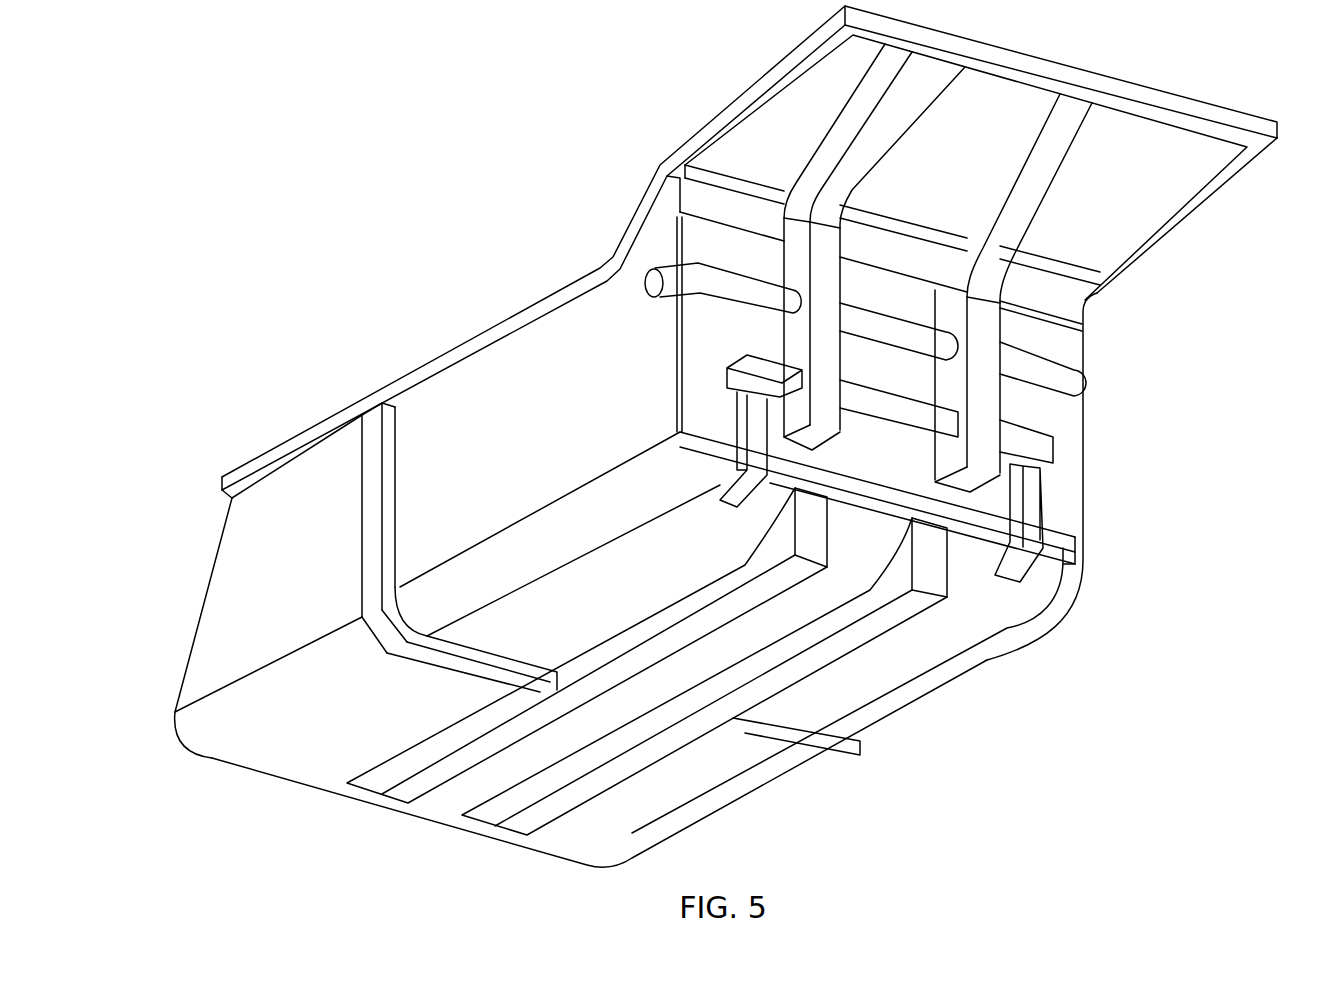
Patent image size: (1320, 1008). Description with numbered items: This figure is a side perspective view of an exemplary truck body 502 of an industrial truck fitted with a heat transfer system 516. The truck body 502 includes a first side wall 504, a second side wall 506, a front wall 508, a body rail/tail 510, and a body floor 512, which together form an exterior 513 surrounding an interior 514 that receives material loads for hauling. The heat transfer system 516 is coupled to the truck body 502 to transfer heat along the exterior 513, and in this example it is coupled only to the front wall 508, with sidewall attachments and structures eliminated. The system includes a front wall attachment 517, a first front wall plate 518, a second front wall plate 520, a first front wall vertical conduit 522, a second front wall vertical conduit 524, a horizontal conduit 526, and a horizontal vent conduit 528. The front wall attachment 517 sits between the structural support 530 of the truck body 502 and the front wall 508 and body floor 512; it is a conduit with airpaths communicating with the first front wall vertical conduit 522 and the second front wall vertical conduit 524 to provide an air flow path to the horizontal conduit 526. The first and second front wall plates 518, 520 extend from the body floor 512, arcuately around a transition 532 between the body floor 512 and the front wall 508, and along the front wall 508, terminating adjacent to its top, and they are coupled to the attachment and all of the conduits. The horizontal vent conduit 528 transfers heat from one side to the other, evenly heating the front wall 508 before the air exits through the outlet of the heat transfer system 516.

The truck body 502 is at (345, 157).
The first side wall 504 is at (496, 367).
The second side wall 506 is at (1085, 413).
The front wall 508 is at (1067, 350).
The body rail/tail 510 is at (202, 607).
The body floor 512 is at (302, 765).
The exterior 513 is at (438, 402).
The interior 514 is at (588, 217).
The heat transfer system 516 is at (1123, 472).
The front wall attachment 517 is at (862, 510).
The first front wall plate 518 is at (698, 443).
The second front wall plate 520 is at (1073, 543).
The first front wall vertical conduit 522 is at (743, 417).
The second front wall vertical conduit 524 is at (1033, 493).
The horizontal conduit 526 is at (895, 413).
The horizontal vent conduit 528 is at (893, 333).
The structural support 530 is at (813, 537).
The transition 532 is at (1063, 590).